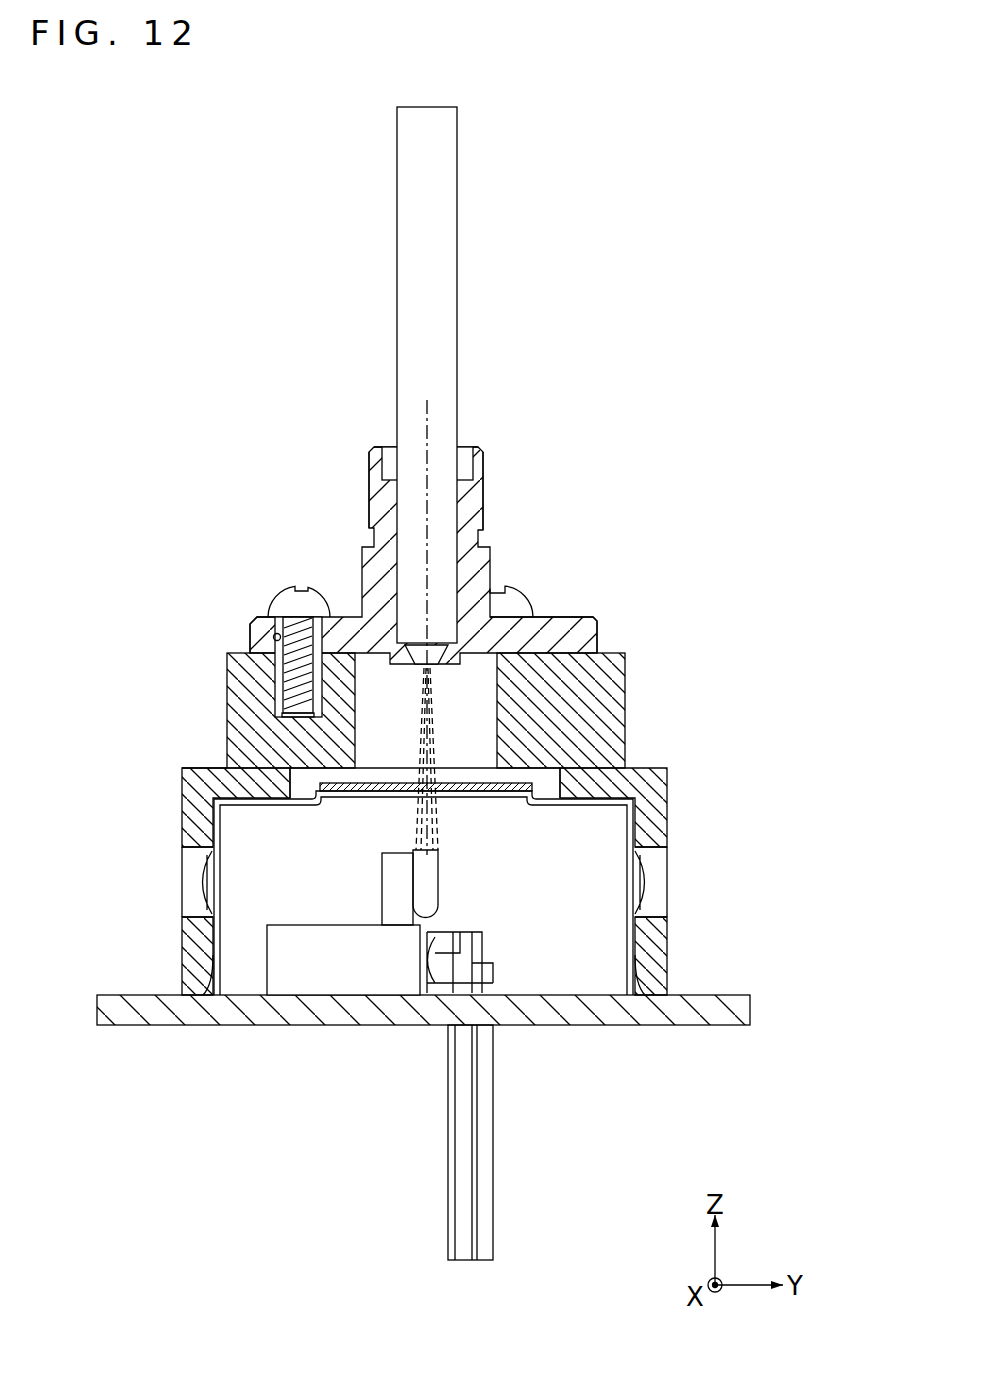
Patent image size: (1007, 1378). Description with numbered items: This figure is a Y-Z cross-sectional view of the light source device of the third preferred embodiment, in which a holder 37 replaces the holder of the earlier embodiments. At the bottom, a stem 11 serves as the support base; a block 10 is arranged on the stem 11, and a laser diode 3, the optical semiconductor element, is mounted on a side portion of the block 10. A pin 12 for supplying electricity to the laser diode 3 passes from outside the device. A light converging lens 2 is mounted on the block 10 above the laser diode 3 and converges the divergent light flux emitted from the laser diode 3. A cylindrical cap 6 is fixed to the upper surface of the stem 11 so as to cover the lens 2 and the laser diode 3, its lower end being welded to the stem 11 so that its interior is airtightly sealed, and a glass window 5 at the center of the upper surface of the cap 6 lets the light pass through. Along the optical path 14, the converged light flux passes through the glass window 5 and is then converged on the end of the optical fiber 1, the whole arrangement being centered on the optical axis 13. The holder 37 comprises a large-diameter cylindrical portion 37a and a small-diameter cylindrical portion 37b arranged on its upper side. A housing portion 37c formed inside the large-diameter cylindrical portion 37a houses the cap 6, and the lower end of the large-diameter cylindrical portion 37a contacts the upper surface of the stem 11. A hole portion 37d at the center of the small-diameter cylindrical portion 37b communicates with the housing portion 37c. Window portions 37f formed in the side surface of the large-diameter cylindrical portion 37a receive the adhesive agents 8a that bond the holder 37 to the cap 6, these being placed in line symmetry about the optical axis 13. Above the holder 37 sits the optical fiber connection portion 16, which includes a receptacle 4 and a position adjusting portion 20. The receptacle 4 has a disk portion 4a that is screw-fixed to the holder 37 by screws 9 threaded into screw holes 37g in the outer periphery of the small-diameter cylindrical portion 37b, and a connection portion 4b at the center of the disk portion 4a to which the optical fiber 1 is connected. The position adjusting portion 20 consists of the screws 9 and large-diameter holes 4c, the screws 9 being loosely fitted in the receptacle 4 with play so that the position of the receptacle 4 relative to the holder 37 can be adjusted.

The optical fiber 1 is at (407, 226).
The light converging lens 2 is at (427, 889).
The laser diode 3 is at (430, 960).
The receptacle 4 is at (357, 565).
The disk portion 4a is at (565, 616).
The connection portion 4b is at (477, 508).
The large-diameter hole 4c is at (273, 635).
The glass window 5 is at (462, 783).
The cap 6 is at (217, 807).
The adhesive agent 8a is at (203, 903).
The screw 9 is at (285, 600).
The block 10 is at (325, 977).
The stem 11 is at (752, 1012).
The pin 12 is at (490, 1182).
The optical axis 13 is at (428, 432).
The optical path 14 is at (415, 829).
The optical fiber connection portion 16 is at (287, 537).
The position adjusting portion 20 is at (232, 627).
The holder 37 is at (420, 790).
The large-diameter cylindrical portion 37a is at (188, 958).
The small-diameter cylindrical portion 37b is at (235, 720).
The housing portion 37c is at (553, 770).
The hole portion 37d is at (500, 660).
The window portion 37f is at (193, 858).
The screw hole 37g is at (278, 688).